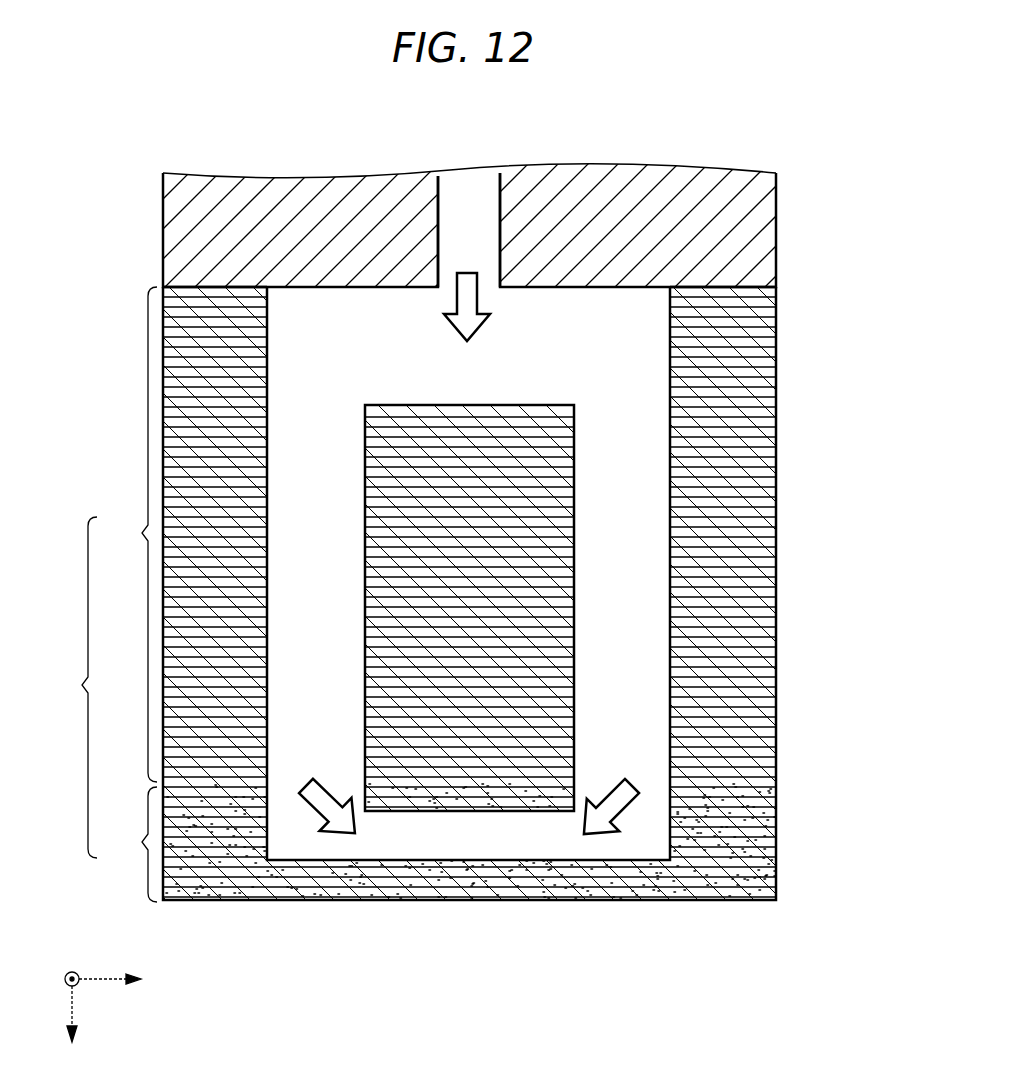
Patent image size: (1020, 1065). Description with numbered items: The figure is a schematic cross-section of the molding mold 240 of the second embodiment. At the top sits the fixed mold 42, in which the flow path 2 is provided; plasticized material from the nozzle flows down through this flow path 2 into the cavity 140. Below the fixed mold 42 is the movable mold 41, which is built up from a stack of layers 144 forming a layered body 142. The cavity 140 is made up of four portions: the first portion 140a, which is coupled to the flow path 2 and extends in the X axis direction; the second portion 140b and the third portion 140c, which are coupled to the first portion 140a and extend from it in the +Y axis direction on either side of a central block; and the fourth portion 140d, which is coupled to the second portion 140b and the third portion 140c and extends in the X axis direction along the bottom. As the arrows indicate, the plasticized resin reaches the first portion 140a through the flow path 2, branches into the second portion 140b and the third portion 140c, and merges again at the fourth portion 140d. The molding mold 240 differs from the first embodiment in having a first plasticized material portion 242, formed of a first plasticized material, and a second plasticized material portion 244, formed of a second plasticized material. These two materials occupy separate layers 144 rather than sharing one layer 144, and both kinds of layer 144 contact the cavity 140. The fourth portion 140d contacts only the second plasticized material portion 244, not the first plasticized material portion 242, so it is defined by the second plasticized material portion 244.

The flow path 2 is at (473, 228).
The movable mold 41 is at (510, 632).
The fixed mold 42 is at (733, 233).
The cavity 140 is at (577, 278).
The first portion 140a is at (440, 358).
The second portion 140b is at (330, 572).
The third portion 140c is at (614, 560).
The fourth portion 140d is at (470, 838).
The layered body 142 is at (70, 687).
The layer 144 is at (760, 717).
The molding mold 240 is at (822, 146).
The first plasticized material portion 242 is at (128, 534).
The second plasticized material portion 244 is at (128, 844).